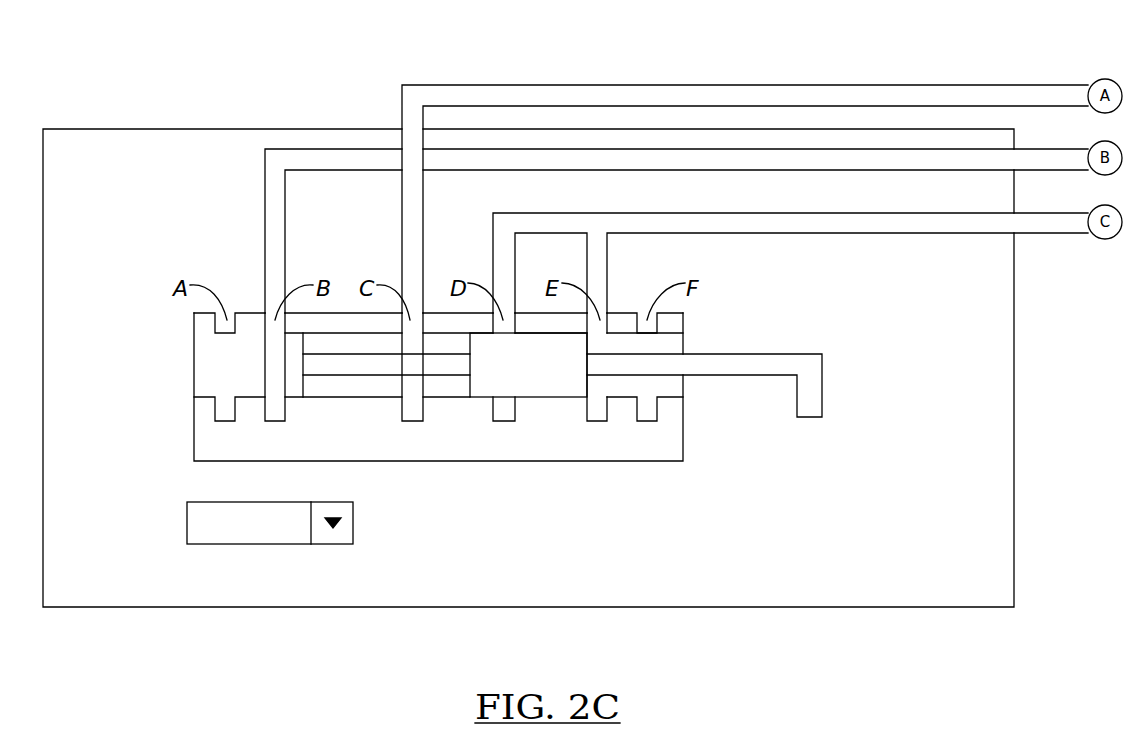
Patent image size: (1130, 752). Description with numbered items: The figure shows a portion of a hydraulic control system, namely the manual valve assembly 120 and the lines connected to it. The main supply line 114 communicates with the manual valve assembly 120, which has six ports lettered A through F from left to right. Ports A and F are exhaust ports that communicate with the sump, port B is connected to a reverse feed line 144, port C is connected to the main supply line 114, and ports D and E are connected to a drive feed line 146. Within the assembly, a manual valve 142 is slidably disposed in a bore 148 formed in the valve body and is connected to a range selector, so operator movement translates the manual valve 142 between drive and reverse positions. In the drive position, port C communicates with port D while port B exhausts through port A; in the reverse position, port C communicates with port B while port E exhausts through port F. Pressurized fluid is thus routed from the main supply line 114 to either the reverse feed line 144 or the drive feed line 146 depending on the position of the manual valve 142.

The main supply line 114 is at (713, 85).
The reverse feed line 144 is at (772, 150).
The drive feed line 146 is at (883, 233).
The manual valve assembly 120 is at (722, 304).
The manual valve 142 is at (752, 375).
The bore 148 is at (432, 397).